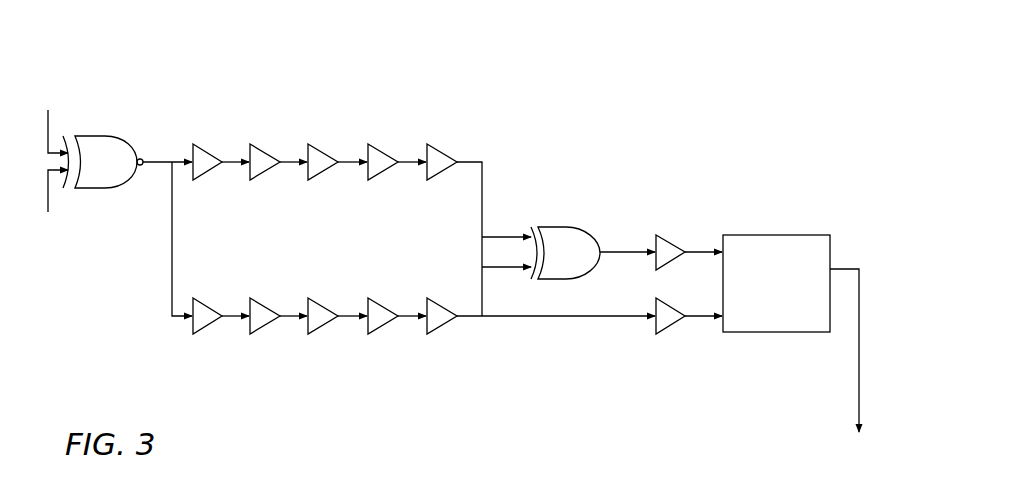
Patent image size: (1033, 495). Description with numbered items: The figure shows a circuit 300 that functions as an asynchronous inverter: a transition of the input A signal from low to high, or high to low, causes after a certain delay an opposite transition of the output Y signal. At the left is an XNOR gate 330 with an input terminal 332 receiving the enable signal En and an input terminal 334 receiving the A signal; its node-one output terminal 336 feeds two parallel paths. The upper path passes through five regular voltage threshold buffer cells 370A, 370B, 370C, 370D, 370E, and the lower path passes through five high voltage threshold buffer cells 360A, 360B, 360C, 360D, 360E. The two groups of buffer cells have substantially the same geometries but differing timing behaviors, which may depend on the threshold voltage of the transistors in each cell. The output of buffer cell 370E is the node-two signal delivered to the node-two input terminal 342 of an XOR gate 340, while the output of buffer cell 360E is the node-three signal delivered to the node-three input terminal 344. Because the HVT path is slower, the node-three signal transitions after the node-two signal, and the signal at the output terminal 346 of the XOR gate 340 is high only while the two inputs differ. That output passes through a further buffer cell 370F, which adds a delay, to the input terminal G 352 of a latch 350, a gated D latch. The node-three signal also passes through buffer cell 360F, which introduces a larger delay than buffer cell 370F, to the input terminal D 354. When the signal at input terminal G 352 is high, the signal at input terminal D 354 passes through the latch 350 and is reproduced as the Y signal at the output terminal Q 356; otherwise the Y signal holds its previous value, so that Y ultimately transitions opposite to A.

The circuit 300 is at (801, 52).
The XNOR gate 330 is at (105, 136).
The input terminal 332 is at (63, 188).
The input terminal 334 is at (62, 152).
The node 1 output terminal 336 is at (142, 164).
The XOR gate 340 is at (585, 226).
The node 2 input terminal 342 is at (530, 238).
The node 3 input terminal 344 is at (528, 267).
The output terminal 346 is at (602, 251).
The latch 350 is at (778, 234).
The input terminal G 352 is at (722, 235).
The input terminal D 354 is at (720, 333).
The output terminal Q 356 is at (840, 268).
The HVT buffer cell 360A is at (215, 326).
The HVT buffer cell 360B is at (272, 328).
The HVT buffer cell 360C is at (330, 328).
The HVT buffer cell 360D is at (390, 328).
The HVT buffer cell 360E is at (447, 324).
The HVT buffer cell 360F is at (665, 332).
The RVT buffer cell 370A is at (218, 150).
The RVT buffer cell 370B is at (275, 150).
The RVT buffer cell 370C is at (333, 150).
The RVT buffer cell 370D is at (390, 150).
The RVT buffer cell 370E is at (447, 150).
The RVT buffer cell 370F is at (670, 234).